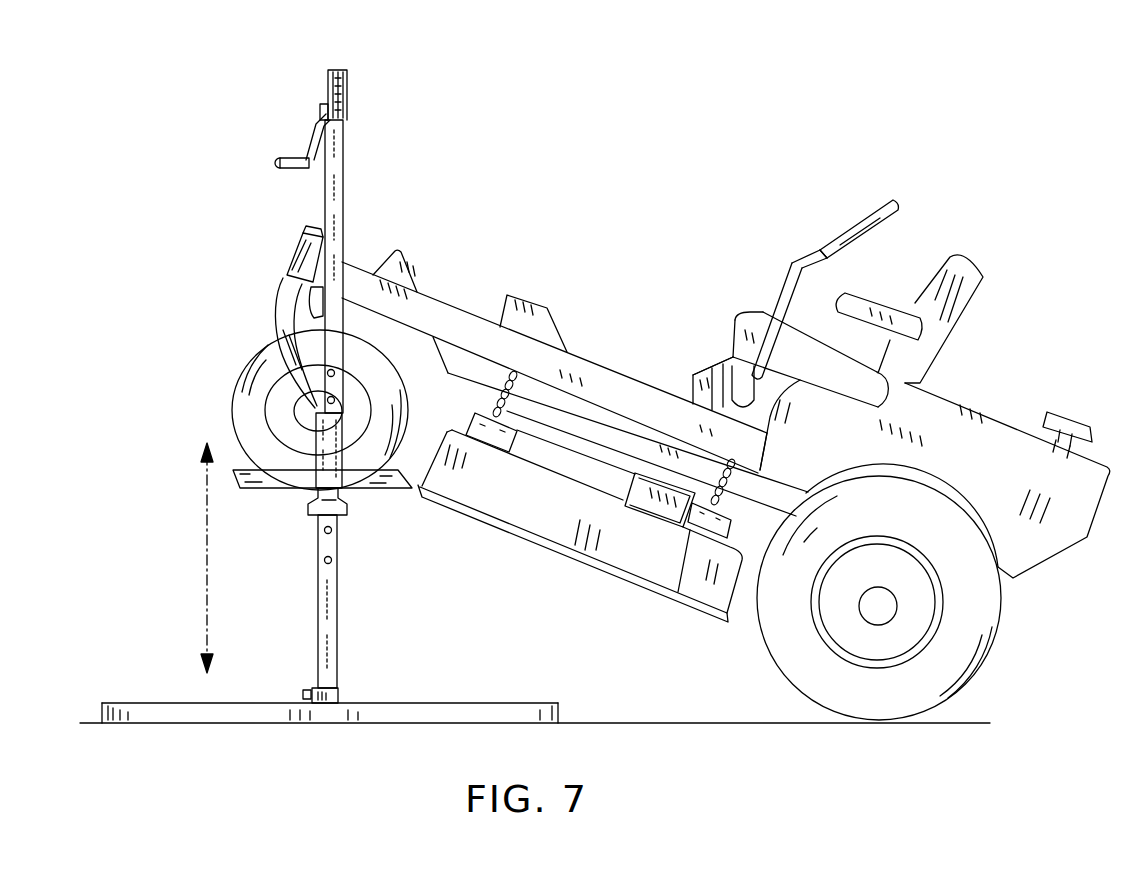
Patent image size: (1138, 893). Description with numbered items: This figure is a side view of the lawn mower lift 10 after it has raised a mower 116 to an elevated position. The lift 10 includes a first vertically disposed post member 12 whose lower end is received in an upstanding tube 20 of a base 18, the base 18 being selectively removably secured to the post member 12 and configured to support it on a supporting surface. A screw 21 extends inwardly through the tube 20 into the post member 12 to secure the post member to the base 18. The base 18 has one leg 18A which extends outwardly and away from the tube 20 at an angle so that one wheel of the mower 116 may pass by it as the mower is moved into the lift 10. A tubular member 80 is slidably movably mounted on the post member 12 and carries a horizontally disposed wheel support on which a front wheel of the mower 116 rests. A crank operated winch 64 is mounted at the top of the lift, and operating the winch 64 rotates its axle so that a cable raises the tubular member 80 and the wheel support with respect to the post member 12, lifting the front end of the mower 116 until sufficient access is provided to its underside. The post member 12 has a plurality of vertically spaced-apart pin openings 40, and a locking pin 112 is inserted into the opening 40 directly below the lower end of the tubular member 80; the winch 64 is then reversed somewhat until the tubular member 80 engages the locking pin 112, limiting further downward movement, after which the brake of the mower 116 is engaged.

The lawn mower lift 10 is at (393, 148).
The first post member 12 is at (338, 203).
The crank operated winch 64 is at (345, 78).
The tubular member 80 is at (326, 444).
The locking pin 112 is at (318, 511).
The pin openings 40 is at (338, 531).
The upstanding tube 20 is at (334, 684).
The screw 21 is at (305, 693).
The base 18 is at (510, 704).
The leg 18A is at (437, 712).
The mower 116 is at (640, 354).